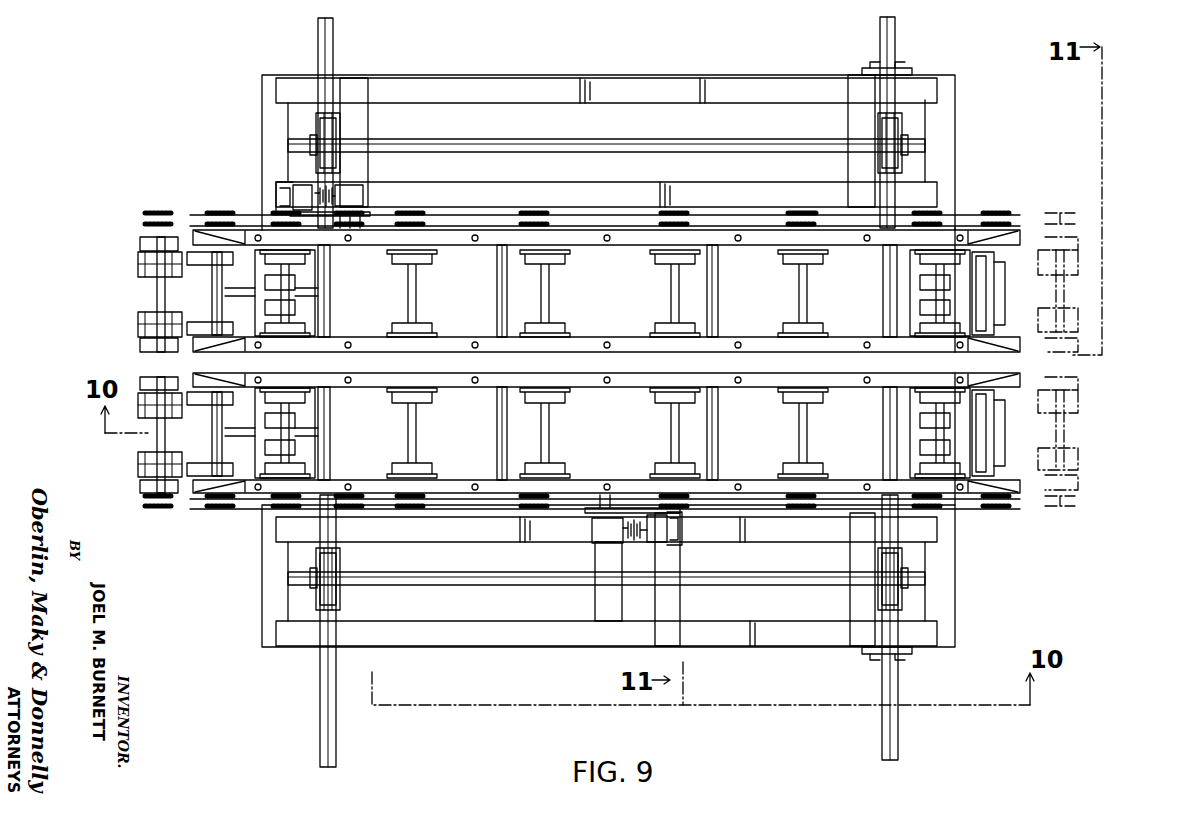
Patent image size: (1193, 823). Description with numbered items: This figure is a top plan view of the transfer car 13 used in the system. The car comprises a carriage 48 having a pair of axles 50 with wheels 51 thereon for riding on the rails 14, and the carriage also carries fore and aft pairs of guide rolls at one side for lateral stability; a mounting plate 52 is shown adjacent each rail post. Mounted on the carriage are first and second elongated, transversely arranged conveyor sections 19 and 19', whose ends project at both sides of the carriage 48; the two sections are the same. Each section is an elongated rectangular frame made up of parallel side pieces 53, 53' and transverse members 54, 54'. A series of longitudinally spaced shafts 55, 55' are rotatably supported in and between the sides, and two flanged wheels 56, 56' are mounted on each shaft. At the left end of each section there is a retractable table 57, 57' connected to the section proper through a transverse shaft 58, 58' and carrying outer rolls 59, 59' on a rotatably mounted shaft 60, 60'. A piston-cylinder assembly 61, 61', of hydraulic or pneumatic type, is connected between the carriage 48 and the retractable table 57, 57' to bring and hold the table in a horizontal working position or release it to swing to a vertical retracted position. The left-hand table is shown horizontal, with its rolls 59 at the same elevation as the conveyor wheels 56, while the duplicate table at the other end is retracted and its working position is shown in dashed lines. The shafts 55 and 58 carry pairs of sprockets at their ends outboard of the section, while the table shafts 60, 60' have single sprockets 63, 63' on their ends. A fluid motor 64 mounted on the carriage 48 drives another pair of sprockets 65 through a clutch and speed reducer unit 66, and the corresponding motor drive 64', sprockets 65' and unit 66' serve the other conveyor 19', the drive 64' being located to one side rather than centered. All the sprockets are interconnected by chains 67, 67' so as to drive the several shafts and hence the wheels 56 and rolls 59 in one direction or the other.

The transfer car 13 is at (201, 146).
The rails 14 is at (334, 47).
The first conveyor section 19 is at (988, 466).
The second conveyor section 19' is at (991, 264).
The carriage 48 is at (262, 586).
The axles 50 is at (737, 141).
The wheels 51 is at (320, 125).
The plate 52 is at (915, 70).
The side pieces 53 is at (606, 433).
The side pieces 53' is at (606, 291).
The transverse members 54 is at (607, 433).
The transverse members 54' is at (607, 291).
The shafts 55 is at (691, 433).
The shafts 55' is at (629, 293).
The flanged wheels 56 is at (625, 433).
The flanged wheels 56' is at (610, 293).
The retractable table 57 is at (114, 438).
The retractable table 57' is at (127, 294).
The transverse shaft 58 is at (613, 433).
The transverse shaft 58' is at (251, 293).
The outer rolls 59 is at (599, 439).
The outer rolls 59' is at (624, 294).
The shaft 60 is at (620, 435).
The shaft 60' is at (584, 294).
The piston-cylinder assembly 61 is at (565, 447).
The piston-cylinder assembly 61' is at (597, 293).
The sprocket 63 is at (618, 527).
The sprocket 63' is at (637, 212).
The fluid motor 64 is at (682, 538).
The motor drive 64' is at (277, 197).
The sprockets 65 is at (610, 516).
The sprockets 65' is at (366, 208).
The clutch and speed reducer unit 66 is at (587, 540).
The clutch and speed reducer unit 66' is at (389, 180).
The chains 67 is at (605, 532).
The chains 67' is at (605, 210).